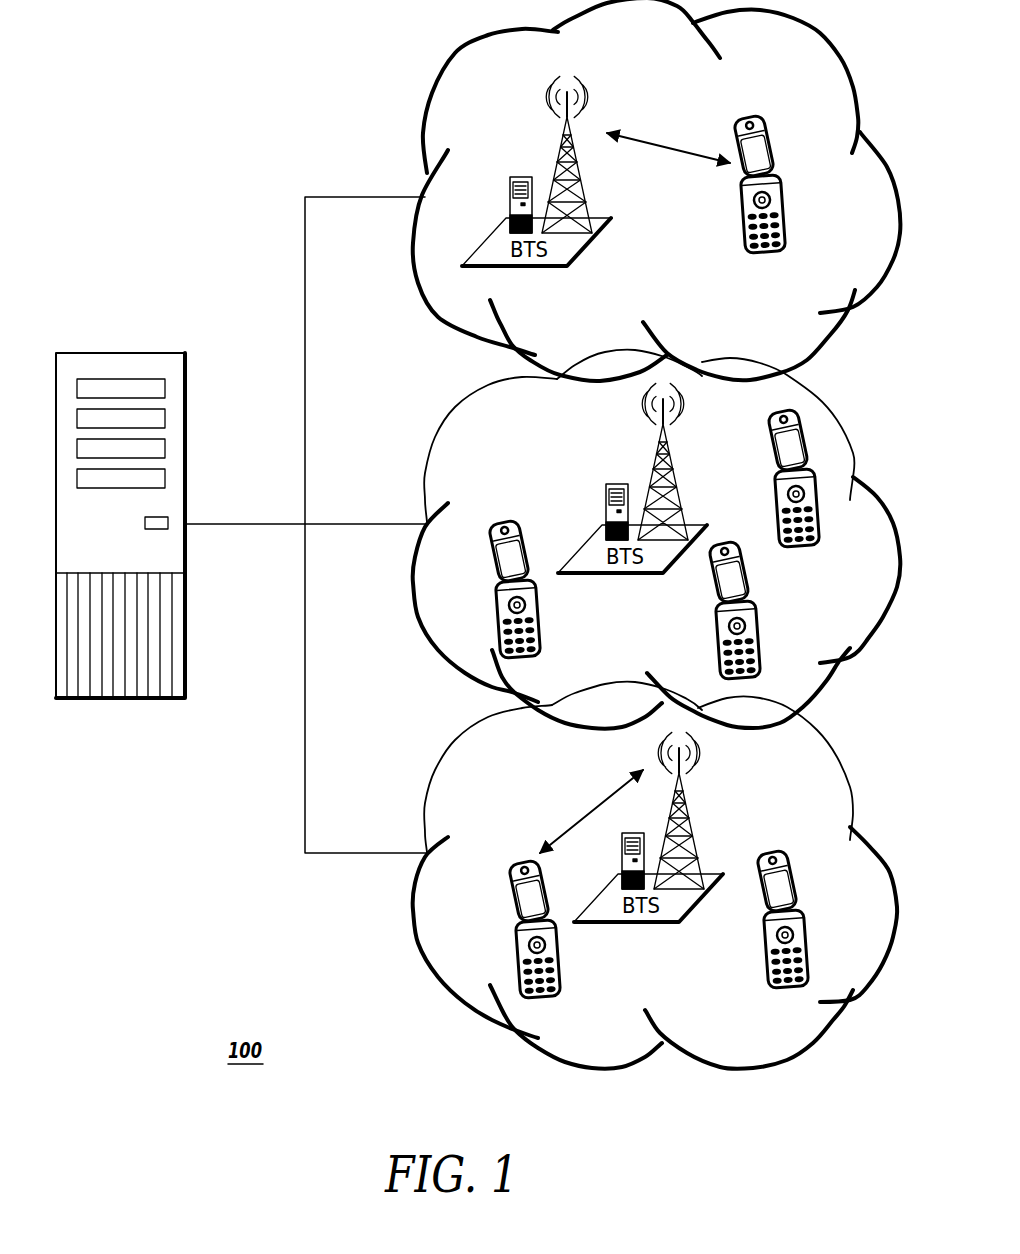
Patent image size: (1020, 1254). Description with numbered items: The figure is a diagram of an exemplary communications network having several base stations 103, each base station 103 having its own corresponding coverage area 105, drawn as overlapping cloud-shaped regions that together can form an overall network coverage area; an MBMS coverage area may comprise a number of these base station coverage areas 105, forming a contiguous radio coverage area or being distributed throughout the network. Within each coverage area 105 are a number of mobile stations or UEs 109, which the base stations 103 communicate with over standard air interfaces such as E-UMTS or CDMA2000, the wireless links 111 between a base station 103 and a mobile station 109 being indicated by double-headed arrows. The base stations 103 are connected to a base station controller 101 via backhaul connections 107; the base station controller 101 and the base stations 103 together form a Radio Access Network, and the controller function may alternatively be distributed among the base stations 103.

The base station controller 101 is at (119, 353).
The base station 103 is at (510, 205).
The coverage area 105 is at (453, 55).
The backhaul connection 107 is at (305, 300).
The mobile station 109 is at (787, 193).
The wireless link 111 is at (670, 147).